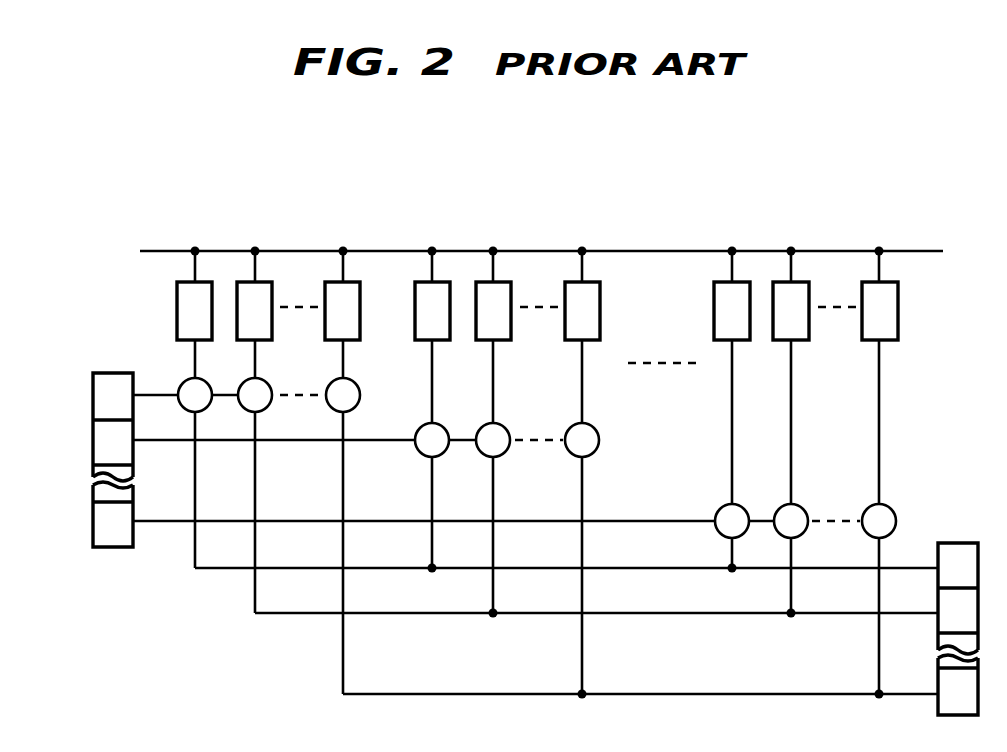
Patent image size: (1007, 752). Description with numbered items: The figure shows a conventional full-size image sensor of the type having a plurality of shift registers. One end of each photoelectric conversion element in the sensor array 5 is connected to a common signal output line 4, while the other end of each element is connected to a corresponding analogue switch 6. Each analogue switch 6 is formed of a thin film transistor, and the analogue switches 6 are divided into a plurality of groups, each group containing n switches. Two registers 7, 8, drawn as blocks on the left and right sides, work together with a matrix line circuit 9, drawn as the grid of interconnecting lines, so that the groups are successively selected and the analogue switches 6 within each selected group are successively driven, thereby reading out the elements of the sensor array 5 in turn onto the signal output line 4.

The signal output line 4 is at (393, 250).
The sensor array 5 is at (140, 320).
The analogue switch 6 is at (364, 381).
The register 7 is at (119, 558).
The register 8 is at (956, 532).
The matrix line circuit 9 is at (398, 586).